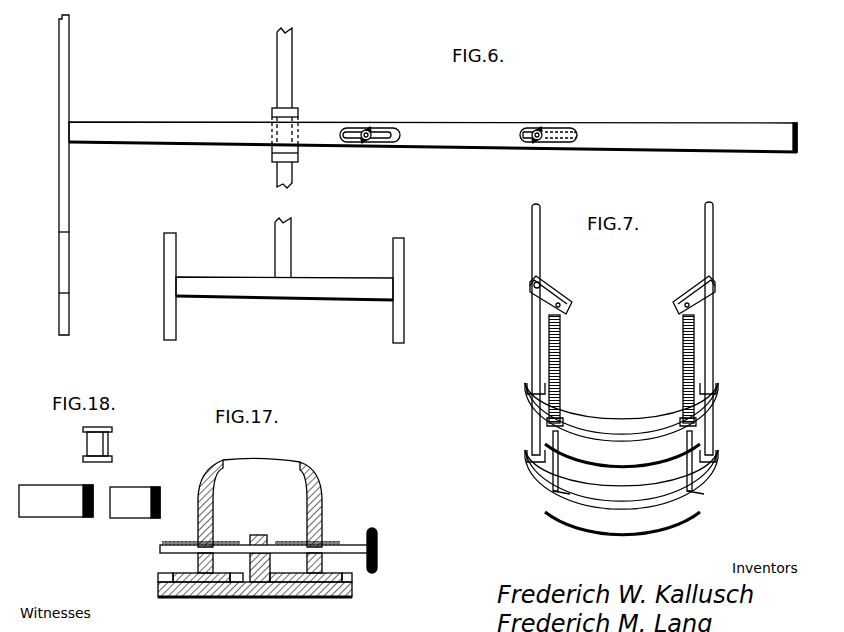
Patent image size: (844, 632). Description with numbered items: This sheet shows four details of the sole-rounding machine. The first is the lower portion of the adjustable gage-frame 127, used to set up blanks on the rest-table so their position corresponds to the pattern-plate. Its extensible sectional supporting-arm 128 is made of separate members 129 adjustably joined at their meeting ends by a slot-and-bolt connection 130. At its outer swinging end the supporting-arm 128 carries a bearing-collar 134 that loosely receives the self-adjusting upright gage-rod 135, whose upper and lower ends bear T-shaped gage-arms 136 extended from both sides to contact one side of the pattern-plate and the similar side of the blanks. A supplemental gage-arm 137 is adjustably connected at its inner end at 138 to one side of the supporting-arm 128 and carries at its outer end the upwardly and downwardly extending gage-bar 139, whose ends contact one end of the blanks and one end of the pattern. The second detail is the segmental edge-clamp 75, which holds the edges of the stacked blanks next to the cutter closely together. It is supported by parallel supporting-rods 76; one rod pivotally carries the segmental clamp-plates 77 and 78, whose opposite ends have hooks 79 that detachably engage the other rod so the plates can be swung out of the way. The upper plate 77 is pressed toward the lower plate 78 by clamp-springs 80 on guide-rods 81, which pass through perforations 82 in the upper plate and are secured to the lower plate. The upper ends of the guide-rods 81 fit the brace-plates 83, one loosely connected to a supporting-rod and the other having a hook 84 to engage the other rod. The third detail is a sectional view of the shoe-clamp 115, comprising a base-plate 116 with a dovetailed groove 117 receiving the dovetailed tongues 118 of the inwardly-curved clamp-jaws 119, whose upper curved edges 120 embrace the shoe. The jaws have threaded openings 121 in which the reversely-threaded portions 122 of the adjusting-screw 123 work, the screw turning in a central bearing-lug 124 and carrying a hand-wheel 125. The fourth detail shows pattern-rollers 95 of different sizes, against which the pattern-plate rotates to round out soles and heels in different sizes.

In FIG. 6, the gage-bar 139 is at (68, 79).
In FIG. 6, the supplemental gage-arm 137 is at (158, 128).
In FIG. 6, the adjustable gage-frame 127 is at (444, 105).
In FIG. 6, the extensible sectional supporting-arm 128 is at (460, 148).
In FIG. 6, the self-adjusting upright gage-rod 135 is at (292, 62).
In FIG. 6, the bearing-collar 134 is at (299, 111).
In FIG. 6, the adjustable connection 138 is at (366, 128).
In FIG. 6, the slot-and-bolt connection 130 is at (537, 128).
In FIG. 6, the separate members 129 is at (410, 145).
In FIG. 6, the T-shaped gage-arms 136 is at (330, 283).
In FIG. 7, the segmental edge-clamp 75 is at (609, 368).
In FIG. 7, the parallel supporting-rods 76 is at (541, 250).
In FIG. 7, the upper segmental clamp-plate 77 is at (614, 430).
In FIG. 7, the lower segmental clamp-plate 78 is at (612, 502).
In FIG. 7, the brace-plates 83 is at (554, 298).
In FIG. 7, the hook 84 is at (541, 284).
In FIG. 7, the clamp-springs 80 is at (561, 370).
In FIG. 7, the perforations 82 is at (563, 425).
In FIG. 7, the guide-rods 81 is at (559, 460).
In FIG. 7, the hooks 79 is at (531, 391).
In FIG. 17, the base-plate 116 is at (248, 599).
In FIG. 17, the dovetailed groove 117 is at (352, 580).
In FIG. 17, the dovetailed tongues 118 is at (178, 573).
In FIG. 17, the adjusting-screw 123 is at (258, 535).
In FIG. 17, the central bearing-lug 124 is at (267, 540).
In FIG. 17, the reversely-threaded portions 122 is at (251, 536).
In FIG. 17, the hand-wheel 125 is at (377, 541).
In FIG. 17, the inwardly-curved clamp-jaws 119 is at (213, 480).
In FIG. 17, the threaded openings 121 is at (218, 528).
In FIG. 17, the upper curved edges 120 is at (272, 458).
In FIG. 17, the shoe-clamp 115 is at (281, 481).
In FIG. 18, the pattern-roller 95 is at (118, 491).